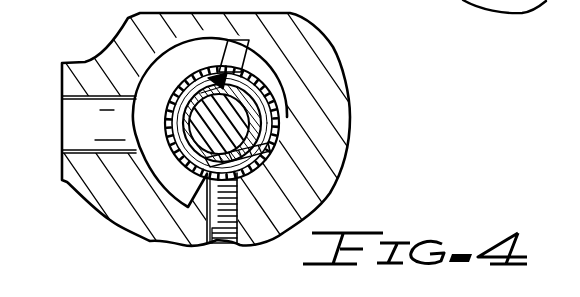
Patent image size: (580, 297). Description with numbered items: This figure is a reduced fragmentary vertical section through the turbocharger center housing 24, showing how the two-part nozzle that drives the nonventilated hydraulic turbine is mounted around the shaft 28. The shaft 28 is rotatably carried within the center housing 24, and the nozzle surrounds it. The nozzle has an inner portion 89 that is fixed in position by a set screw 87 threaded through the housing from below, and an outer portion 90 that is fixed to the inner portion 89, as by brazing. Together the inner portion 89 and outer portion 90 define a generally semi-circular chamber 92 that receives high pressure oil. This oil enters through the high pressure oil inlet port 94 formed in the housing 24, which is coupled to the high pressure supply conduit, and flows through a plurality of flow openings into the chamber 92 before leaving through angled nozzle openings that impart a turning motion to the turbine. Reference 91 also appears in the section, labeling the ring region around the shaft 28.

The turbocharger center housing 24 is at (323, 61).
The high pressure oil inlet port 94 is at (76, 98).
The semi-circular chamber 92 is at (240, 43).
The bearing outer race 91 is at (191, 88).
The shaft 28 is at (262, 112).
The inner portion 89 is at (262, 152).
The outer portion 90 is at (259, 157).
The set screw 87 is at (214, 243).